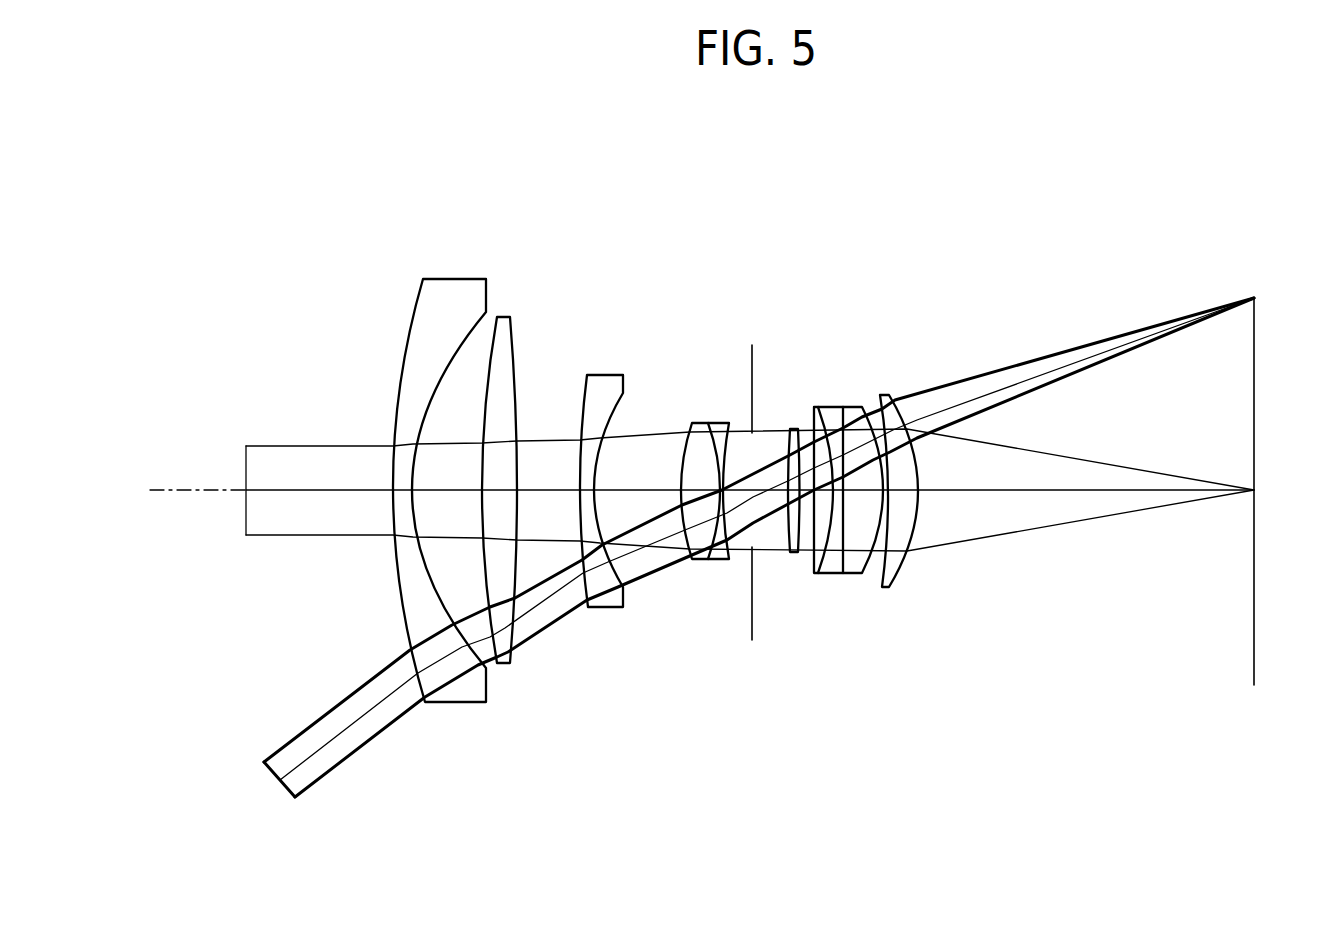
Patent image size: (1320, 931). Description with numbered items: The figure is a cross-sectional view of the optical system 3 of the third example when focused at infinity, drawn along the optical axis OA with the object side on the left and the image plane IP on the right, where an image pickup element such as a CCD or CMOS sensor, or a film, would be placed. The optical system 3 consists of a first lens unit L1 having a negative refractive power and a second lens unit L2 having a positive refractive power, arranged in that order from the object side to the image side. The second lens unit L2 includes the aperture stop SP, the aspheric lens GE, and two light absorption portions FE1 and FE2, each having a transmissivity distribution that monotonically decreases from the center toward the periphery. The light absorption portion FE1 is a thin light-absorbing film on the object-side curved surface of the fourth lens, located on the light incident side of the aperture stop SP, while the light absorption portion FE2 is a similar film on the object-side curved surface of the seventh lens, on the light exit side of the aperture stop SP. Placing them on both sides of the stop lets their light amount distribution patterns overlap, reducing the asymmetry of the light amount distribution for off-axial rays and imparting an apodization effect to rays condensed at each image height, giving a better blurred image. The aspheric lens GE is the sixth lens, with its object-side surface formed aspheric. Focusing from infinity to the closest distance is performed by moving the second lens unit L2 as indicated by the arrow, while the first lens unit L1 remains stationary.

The optical system 3 is at (944, 215).
The first lens unit L1 is at (517, 770).
The second lens unit L2 is at (932, 770).
The optical axis OA is at (201, 490).
The aperture stop SP is at (750, 366).
The light absorption portion FE1 is at (690, 427).
The light absorption portion FE2 is at (815, 428).
The aspheric lens GE is at (793, 555).
The image plane IP is at (1257, 345).